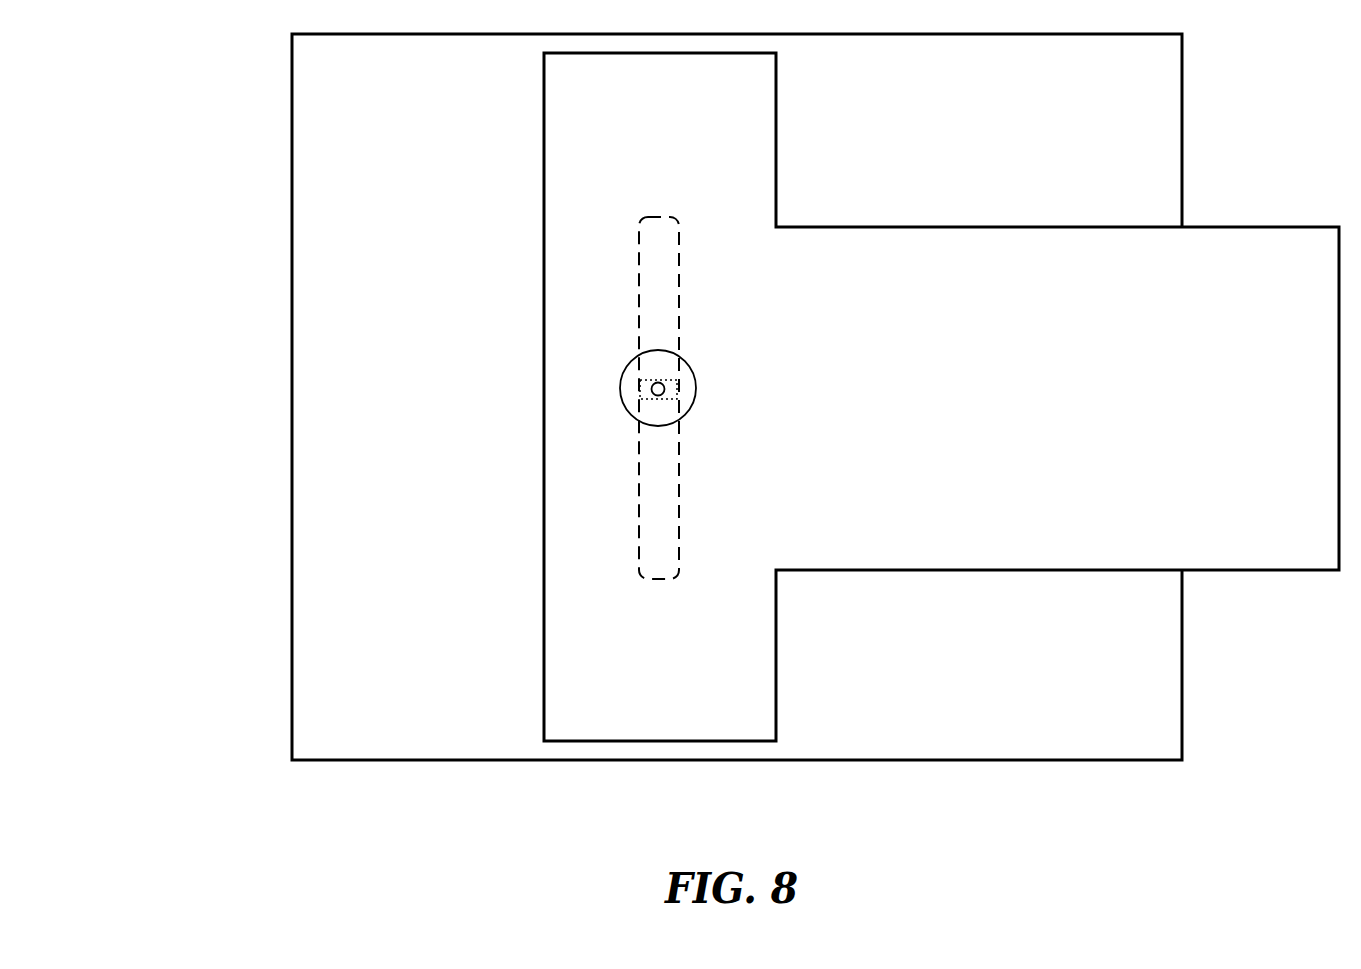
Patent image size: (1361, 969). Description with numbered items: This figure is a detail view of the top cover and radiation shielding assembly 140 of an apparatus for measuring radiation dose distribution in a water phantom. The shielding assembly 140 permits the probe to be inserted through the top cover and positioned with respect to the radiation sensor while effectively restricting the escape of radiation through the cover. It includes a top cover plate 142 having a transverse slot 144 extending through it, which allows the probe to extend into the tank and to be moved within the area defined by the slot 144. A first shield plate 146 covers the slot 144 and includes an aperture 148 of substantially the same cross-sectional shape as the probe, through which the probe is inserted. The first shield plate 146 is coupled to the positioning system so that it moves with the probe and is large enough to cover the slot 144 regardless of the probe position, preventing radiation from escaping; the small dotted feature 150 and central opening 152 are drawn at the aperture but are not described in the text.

The radiation shielding assembly 140 is at (727, 397).
The top cover plate 142 is at (385, 700).
The transverse slot 144 is at (638, 517).
The first shield plate 146 is at (740, 618).
The aperture 148 is at (675, 382).
The rectangular aperture 150 is at (687, 390).
The pin hole 152 is at (661, 393).